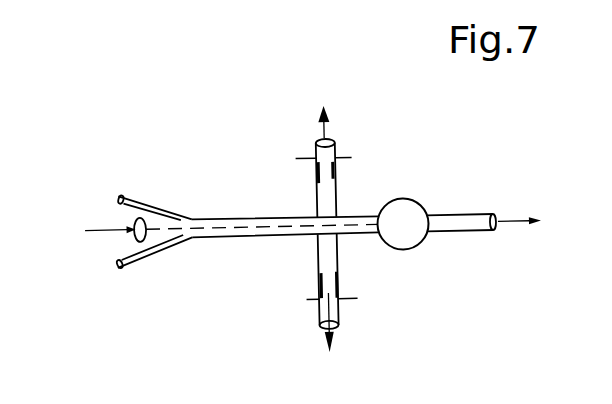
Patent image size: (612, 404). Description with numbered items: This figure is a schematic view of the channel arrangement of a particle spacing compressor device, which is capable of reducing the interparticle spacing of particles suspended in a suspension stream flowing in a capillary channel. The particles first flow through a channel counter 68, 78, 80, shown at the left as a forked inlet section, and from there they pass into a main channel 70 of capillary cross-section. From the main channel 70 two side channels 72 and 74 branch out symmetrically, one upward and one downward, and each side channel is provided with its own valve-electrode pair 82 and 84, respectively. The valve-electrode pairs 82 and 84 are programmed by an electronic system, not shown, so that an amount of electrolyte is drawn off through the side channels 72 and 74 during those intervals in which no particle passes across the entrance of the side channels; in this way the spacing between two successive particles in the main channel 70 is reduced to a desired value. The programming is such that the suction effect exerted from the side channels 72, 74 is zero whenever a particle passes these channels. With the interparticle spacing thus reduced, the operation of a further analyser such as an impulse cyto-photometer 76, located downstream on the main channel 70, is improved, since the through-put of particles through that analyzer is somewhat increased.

The channel counter 68 is at (134, 207).
The main channel 70 is at (267, 225).
The side channel 72 is at (328, 208).
The side channel 74 is at (325, 263).
The impulse cyto-photometer 76 is at (421, 203).
The channel counter 78 is at (172, 250).
The channel counter 80 is at (170, 208).
The valve-electrode pair 82 is at (342, 157).
The valve-electrode pair 84 is at (357, 298).